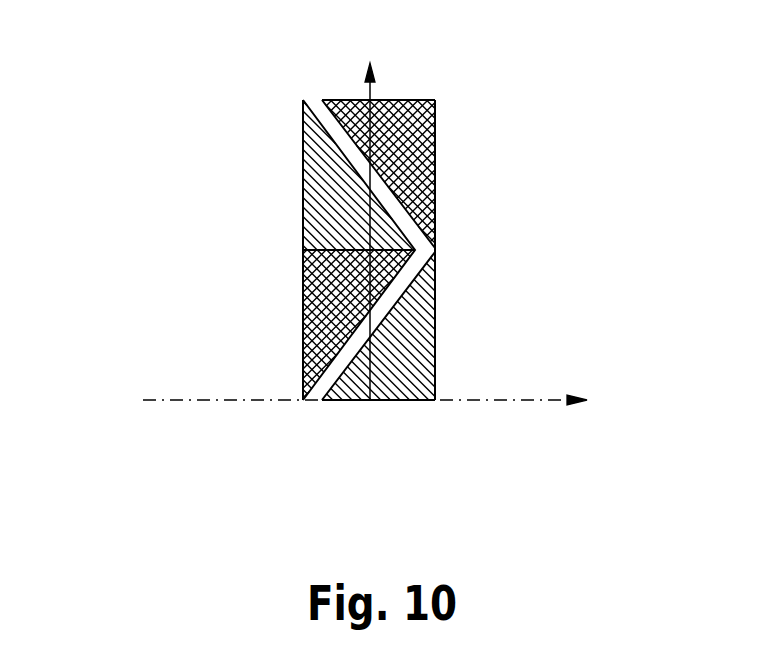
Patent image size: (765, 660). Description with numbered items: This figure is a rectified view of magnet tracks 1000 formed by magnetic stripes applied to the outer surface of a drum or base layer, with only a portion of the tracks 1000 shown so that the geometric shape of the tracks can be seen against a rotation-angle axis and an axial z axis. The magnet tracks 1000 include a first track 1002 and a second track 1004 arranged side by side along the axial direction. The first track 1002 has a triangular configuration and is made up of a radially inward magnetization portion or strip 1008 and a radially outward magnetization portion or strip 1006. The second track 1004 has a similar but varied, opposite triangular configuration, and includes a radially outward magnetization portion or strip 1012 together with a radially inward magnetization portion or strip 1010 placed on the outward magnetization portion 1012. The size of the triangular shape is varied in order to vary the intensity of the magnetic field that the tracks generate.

The magnet tracks 1000 is at (155, 493).
The first track 1002 is at (315, 437).
The second track 1004 is at (455, 437).
The radially outward magnetization portion/strip 1006 is at (303, 176).
The radially inward magnetization portion/strip 1008 is at (303, 339).
The radially inward magnetization portion/strip 1010 is at (436, 175).
The radially outward magnetization portion/strip 1012 is at (436, 344).